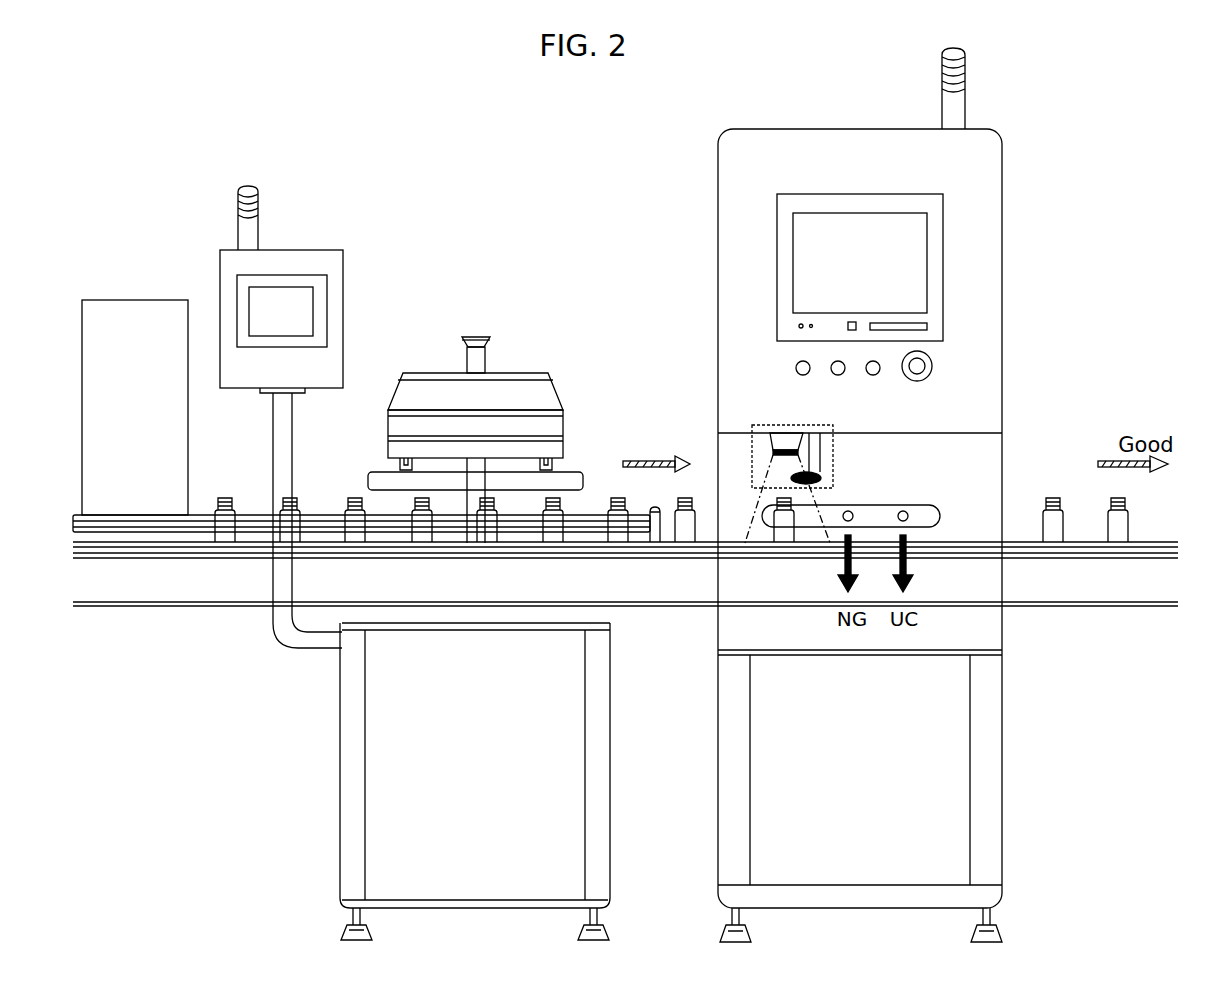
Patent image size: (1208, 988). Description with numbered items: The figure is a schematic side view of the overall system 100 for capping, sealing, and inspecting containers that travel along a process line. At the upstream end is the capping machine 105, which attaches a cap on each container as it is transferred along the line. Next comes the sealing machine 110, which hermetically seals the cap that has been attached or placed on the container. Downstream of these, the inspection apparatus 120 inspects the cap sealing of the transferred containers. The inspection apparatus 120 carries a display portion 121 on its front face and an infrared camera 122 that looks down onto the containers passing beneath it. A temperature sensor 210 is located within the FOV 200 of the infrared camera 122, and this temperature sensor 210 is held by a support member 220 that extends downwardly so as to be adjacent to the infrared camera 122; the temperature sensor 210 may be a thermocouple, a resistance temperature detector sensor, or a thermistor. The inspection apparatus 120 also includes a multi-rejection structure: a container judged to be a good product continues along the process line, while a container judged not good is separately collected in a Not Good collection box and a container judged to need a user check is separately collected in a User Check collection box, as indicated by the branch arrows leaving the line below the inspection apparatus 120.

The overall system 100 is at (1104, 111).
The capping machine 105 is at (128, 300).
The sealing machine 110 is at (433, 372).
The inspection apparatus 120 is at (1002, 190).
The display portion 121 is at (793, 258).
The infrared (IR) camera 122 is at (770, 448).
The FOV 200 is at (765, 427).
The temperature sensor 210 is at (830, 471).
The support member 220 is at (822, 440).